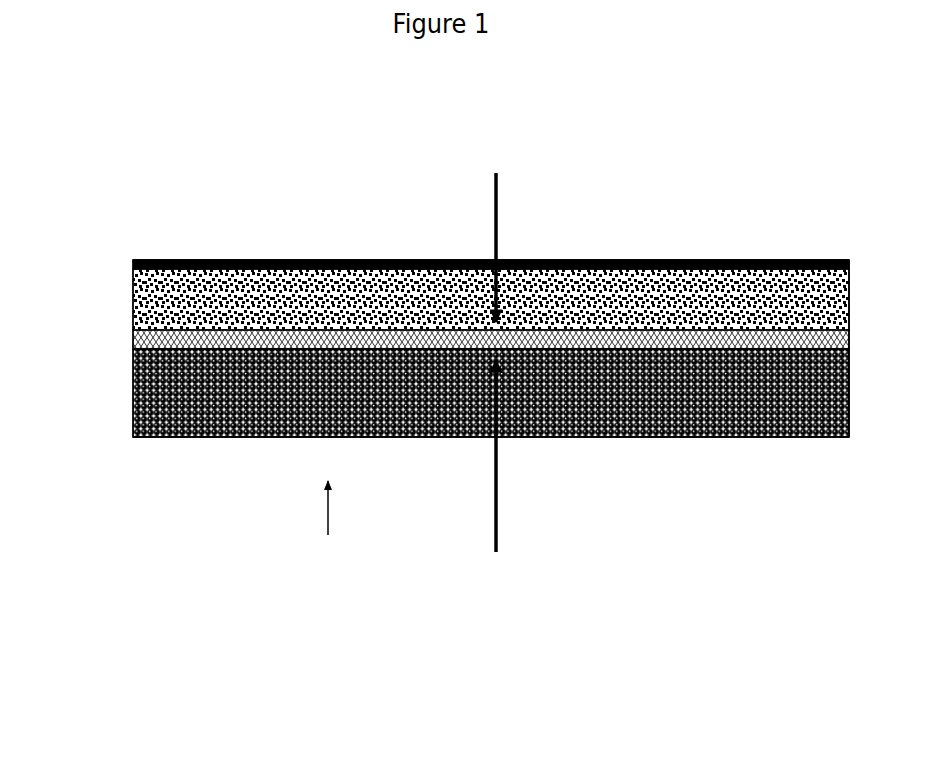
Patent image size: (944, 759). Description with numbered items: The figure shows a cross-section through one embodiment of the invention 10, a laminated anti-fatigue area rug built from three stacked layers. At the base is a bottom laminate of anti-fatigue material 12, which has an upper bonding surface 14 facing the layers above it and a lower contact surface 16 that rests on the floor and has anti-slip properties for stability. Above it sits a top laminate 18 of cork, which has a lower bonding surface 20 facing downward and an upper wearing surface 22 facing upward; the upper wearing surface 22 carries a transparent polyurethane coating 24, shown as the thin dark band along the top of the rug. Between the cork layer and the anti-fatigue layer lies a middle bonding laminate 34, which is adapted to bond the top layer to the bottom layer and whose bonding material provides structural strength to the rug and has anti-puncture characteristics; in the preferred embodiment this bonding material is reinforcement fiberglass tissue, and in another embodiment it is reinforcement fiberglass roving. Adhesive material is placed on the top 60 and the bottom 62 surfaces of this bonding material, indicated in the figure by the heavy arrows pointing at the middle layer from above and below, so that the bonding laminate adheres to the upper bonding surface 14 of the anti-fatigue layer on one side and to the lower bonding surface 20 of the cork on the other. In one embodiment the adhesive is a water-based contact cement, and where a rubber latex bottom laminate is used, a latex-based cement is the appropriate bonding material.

The laminated anti-fatigue area rug 10 is at (184, 177).
The bottom laminate of anti-fatigue material 12 is at (329, 535).
The upper bonding surface 14 is at (808, 341).
The lower contact surface 16 is at (822, 437).
The top laminate of cork 18 is at (133, 293).
The lower bonding surface 20 is at (133, 332).
The upper wearing surface 22 is at (133, 265).
The transparent polyurethane coating 24 is at (240, 260).
The middle bonding laminate 34 is at (849, 349).
The top surface of the bonding material 60 is at (495, 222).
The bottom surface of the bonding material 62 is at (494, 486).